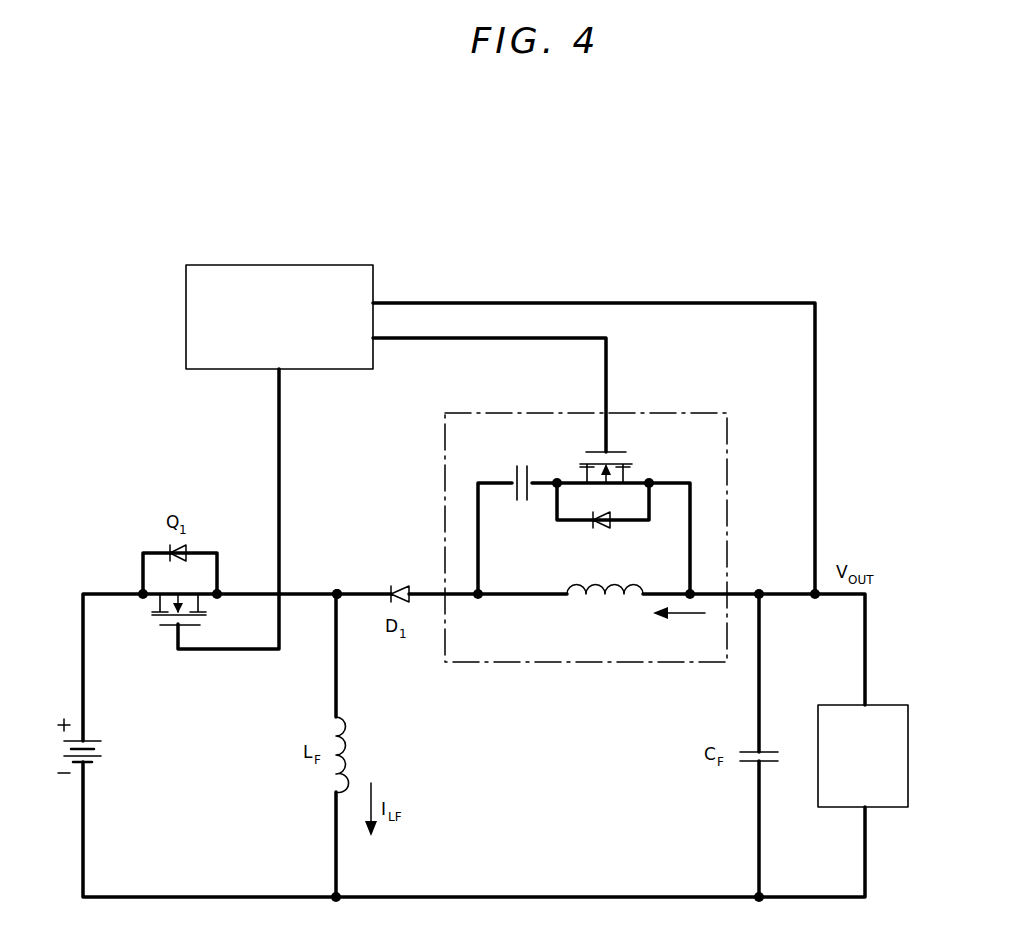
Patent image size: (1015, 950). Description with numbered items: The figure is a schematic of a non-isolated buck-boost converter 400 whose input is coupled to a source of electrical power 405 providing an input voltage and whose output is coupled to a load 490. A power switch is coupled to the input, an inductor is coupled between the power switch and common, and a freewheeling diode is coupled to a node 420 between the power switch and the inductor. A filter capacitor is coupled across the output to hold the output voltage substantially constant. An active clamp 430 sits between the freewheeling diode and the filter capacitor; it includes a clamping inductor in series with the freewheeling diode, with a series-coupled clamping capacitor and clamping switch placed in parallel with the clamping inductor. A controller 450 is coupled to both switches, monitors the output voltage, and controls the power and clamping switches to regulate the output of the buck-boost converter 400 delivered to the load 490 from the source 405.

The non-isolated buck-boost converter 400 is at (620, 174).
The source of electrical power 405 is at (101, 750).
The node 420 is at (337, 594).
The active clamp 430 is at (582, 662).
The controller 450 is at (274, 265).
The load 490 is at (908, 757).